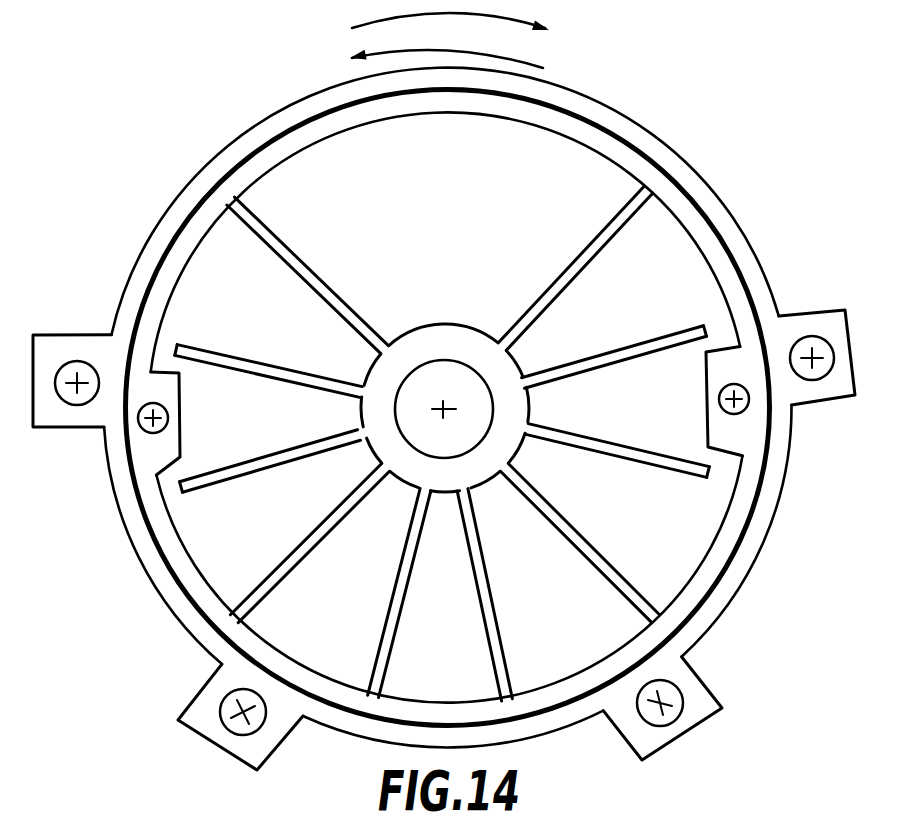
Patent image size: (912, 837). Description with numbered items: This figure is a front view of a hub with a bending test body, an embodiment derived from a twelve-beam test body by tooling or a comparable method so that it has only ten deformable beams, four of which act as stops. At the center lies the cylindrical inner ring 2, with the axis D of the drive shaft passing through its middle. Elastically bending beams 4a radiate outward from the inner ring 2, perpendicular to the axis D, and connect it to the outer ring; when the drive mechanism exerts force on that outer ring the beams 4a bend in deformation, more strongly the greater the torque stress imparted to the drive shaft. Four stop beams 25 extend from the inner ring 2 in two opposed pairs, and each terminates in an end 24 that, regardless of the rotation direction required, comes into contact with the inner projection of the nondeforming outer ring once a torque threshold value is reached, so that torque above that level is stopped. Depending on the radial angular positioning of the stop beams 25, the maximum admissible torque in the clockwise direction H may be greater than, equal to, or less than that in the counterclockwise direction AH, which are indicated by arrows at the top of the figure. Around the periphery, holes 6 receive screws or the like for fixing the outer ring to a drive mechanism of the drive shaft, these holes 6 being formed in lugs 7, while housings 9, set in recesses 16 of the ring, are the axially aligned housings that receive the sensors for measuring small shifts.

The inner ring 2 is at (443, 325).
The elastically bending beams 4a is at (303, 267).
The holes 6 is at (82, 372).
The mounting lugs 7 is at (59, 418).
The housings 9 is at (166, 410).
The recesses 16 is at (167, 455).
The end 24 is at (182, 347).
The stop beams 25 is at (217, 362).
The axis D is at (443, 411).
The clockwise direction H is at (432, 27).
The counterclockwise direction AH is at (475, 65).